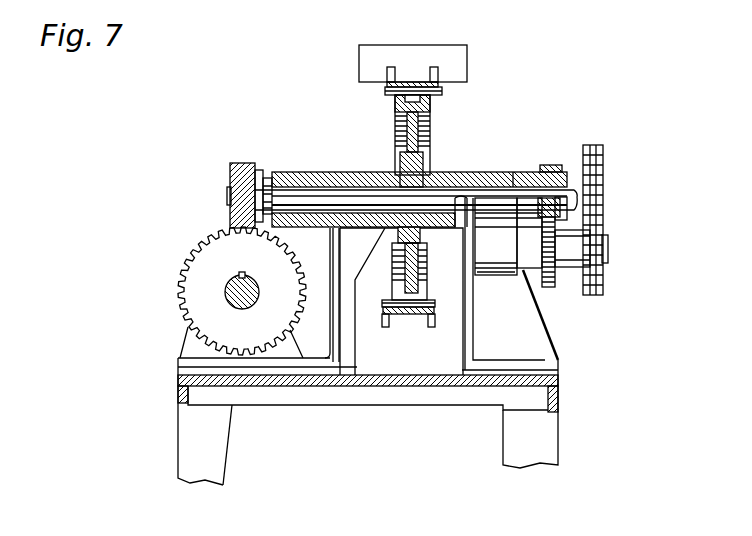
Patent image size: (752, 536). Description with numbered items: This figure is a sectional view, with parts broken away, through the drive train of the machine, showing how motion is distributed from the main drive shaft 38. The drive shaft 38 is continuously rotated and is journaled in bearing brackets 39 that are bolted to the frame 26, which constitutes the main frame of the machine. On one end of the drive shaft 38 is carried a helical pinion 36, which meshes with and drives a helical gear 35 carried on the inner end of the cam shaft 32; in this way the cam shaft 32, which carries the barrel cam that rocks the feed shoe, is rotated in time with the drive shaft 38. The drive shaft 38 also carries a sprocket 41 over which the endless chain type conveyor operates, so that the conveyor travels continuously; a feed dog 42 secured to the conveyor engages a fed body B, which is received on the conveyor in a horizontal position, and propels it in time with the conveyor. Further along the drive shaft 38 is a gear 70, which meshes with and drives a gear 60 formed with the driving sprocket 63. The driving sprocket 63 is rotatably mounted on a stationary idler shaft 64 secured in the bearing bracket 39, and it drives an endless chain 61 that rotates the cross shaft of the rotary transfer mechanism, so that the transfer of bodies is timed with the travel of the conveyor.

The frame 26 is at (362, 398).
The cam shaft 32 is at (229, 292).
The helical gear 35 is at (186, 279).
The helical pinion 36 is at (241, 164).
The drive shaft 38 is at (440, 186).
The bearing brackets 39 is at (313, 172).
The sprocket 41 is at (425, 131).
The feed dog 42 is at (434, 74).
The body B is at (467, 67).
The gear 60 is at (540, 284).
The endless chain 61 is at (582, 152).
The driving sprocket 63 is at (596, 268).
The idler shaft 64 is at (609, 249).
The gear 70 is at (547, 198).